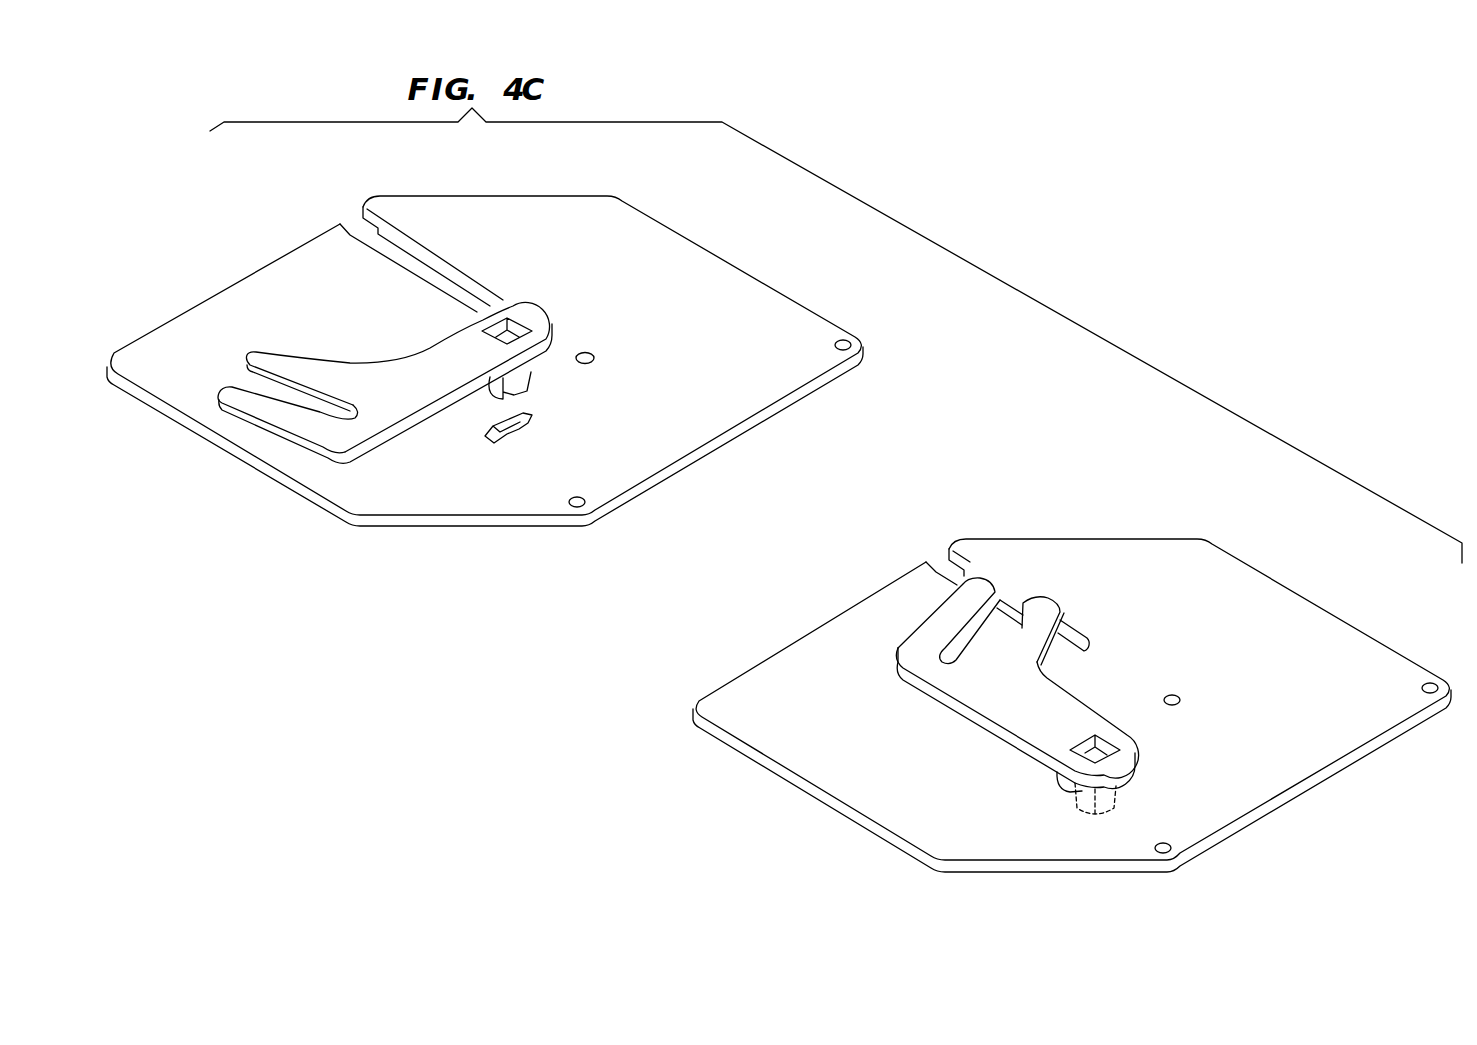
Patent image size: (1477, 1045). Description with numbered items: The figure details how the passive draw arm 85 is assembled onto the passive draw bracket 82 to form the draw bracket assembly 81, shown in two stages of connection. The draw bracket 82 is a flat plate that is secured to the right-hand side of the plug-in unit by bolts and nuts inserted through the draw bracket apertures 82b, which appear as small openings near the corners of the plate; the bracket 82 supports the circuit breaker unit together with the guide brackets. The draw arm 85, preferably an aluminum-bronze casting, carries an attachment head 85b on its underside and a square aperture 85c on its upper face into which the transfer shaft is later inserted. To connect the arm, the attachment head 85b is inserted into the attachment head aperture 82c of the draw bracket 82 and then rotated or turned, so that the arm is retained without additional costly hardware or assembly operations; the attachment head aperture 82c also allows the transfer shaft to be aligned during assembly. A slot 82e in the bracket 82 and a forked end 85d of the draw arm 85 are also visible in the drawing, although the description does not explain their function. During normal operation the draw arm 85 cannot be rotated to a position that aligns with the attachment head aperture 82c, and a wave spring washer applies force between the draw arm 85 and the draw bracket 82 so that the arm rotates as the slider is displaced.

The draw bracket assembly 81 is at (804, 270).
The draw bracket 82 is at (1316, 622).
The draw bracket apertures 82b is at (586, 352).
The attachment head aperture 82c is at (521, 421).
The slot 82e is at (340, 224).
The passive draw arm 85 is at (303, 358).
The attachment head 85b is at (516, 385).
The square aperture 85c is at (509, 314).
The prong 85d is at (235, 395).